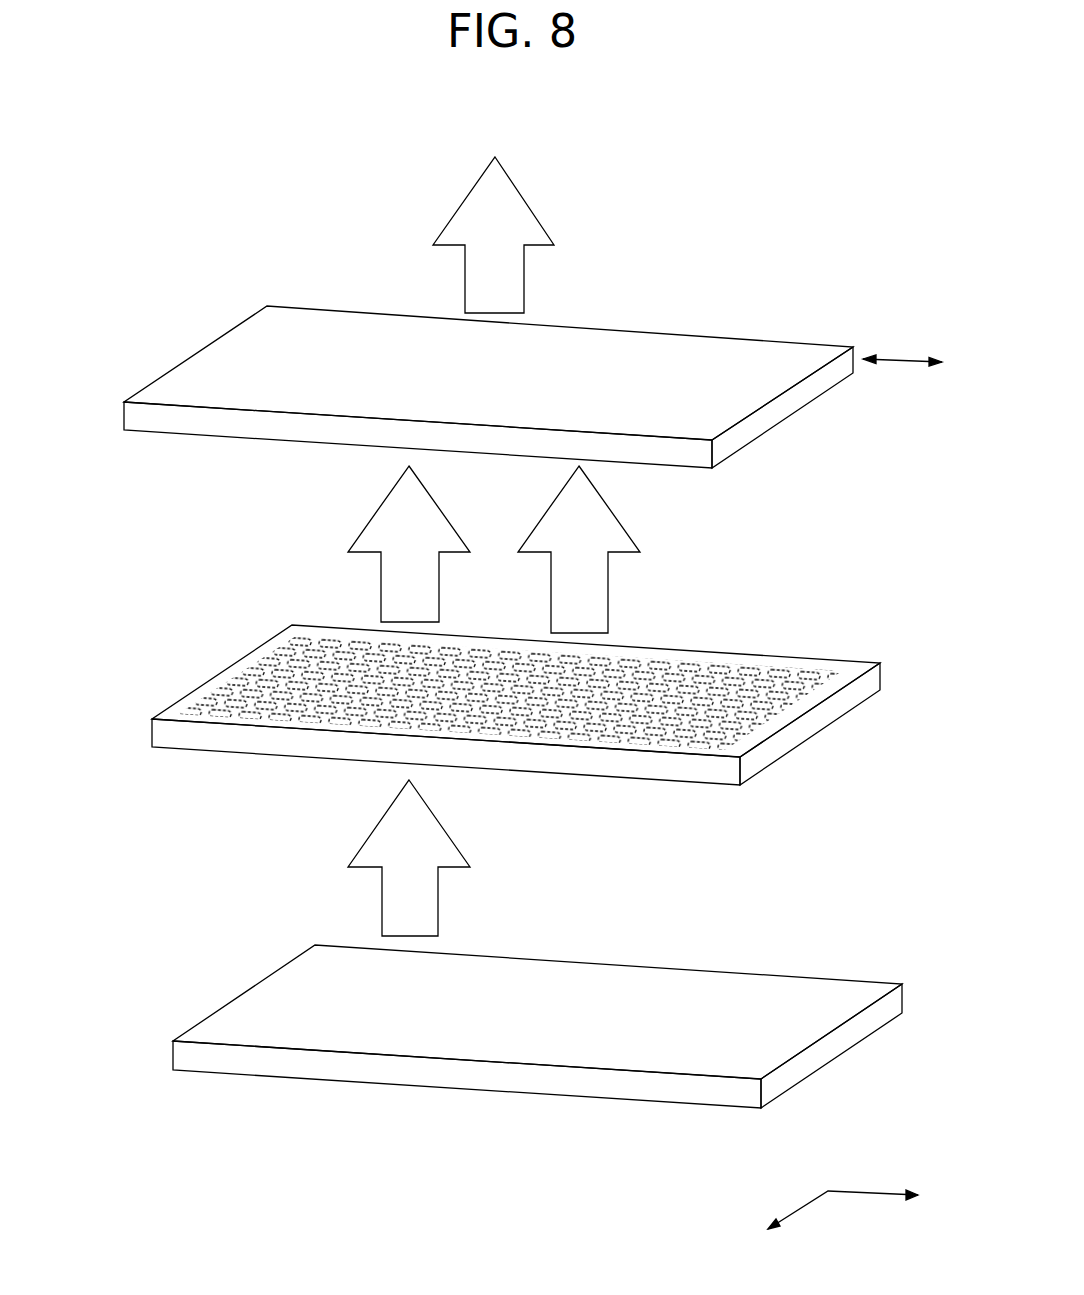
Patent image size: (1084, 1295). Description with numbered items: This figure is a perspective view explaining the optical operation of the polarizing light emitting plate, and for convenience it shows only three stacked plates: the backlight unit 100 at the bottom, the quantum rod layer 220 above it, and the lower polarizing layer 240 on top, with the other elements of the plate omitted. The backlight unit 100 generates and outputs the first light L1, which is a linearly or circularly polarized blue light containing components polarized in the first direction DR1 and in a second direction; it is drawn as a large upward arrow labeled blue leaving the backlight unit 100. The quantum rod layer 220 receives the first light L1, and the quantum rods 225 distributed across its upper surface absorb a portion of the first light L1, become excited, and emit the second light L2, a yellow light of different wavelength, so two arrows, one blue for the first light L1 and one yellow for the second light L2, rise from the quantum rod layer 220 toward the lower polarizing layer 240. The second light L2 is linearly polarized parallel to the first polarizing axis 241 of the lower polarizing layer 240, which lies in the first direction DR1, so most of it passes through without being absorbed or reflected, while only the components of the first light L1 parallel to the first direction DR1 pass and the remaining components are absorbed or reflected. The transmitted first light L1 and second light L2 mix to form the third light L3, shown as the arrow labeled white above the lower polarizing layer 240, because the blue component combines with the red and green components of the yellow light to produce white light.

The backlight unit 100 is at (202, 1033).
The quantum rod layer 220 is at (177, 717).
The quantum rods 225 is at (230, 702).
The lower polarizing layer 240 is at (162, 392).
The first polarizing axis 241 is at (902, 359).
The first light L1 is at (419, 701).
The second light L2 is at (589, 549).
The third light L3 is at (505, 235).
The first direction DR1 is at (845, 1216).